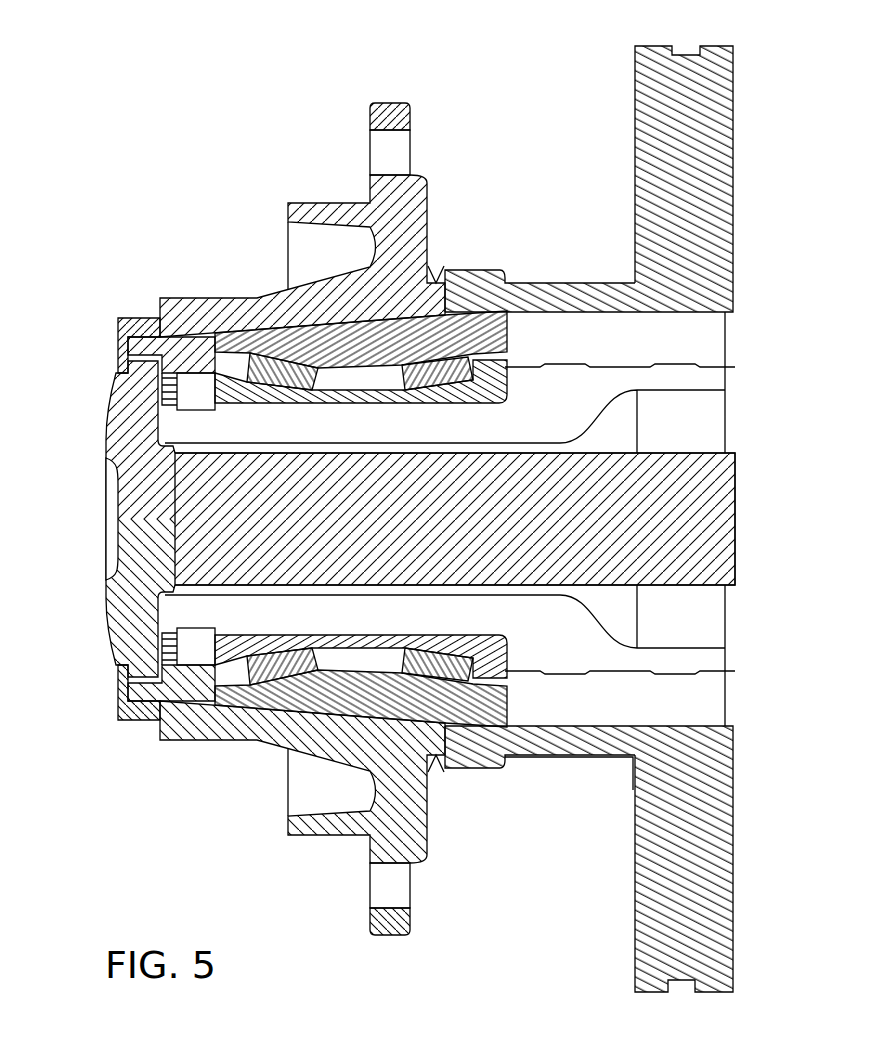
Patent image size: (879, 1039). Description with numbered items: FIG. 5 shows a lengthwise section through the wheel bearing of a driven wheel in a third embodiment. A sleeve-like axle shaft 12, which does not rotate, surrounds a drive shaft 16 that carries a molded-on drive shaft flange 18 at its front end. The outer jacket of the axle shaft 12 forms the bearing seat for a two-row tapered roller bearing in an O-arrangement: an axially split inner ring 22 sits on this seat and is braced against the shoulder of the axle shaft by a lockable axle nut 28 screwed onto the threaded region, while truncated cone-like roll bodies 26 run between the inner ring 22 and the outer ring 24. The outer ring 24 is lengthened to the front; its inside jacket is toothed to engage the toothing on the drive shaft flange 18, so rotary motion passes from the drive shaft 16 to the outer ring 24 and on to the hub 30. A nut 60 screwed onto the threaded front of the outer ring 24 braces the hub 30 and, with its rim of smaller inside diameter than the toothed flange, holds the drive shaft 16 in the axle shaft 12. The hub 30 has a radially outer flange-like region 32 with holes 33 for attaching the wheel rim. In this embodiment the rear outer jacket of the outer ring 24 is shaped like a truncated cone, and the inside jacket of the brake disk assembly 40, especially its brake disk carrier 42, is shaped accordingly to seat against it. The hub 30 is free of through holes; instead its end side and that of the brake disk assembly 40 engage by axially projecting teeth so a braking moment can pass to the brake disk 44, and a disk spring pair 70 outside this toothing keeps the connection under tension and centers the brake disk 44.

The axle shaft 12 is at (705, 378).
The drive shaft 16 is at (715, 518).
The drive shaft flange 18 is at (123, 425).
The inner ring 22 is at (188, 660).
The outer ring 24 is at (470, 690).
The roll bodies 26 is at (262, 372).
The axle nut 28 is at (175, 692).
The hub 30 is at (328, 196).
The flange-like region 32 is at (394, 112).
The holes 33 is at (393, 150).
The brake disk assembly 40 is at (626, 762).
The brake disk carrier 42 is at (540, 300).
The brake disk 44 is at (700, 158).
The nut 60 is at (130, 330).
The disk spring pair 70 is at (434, 278).